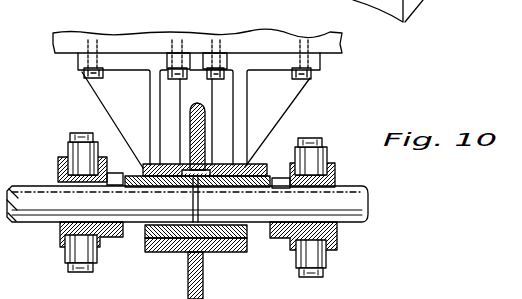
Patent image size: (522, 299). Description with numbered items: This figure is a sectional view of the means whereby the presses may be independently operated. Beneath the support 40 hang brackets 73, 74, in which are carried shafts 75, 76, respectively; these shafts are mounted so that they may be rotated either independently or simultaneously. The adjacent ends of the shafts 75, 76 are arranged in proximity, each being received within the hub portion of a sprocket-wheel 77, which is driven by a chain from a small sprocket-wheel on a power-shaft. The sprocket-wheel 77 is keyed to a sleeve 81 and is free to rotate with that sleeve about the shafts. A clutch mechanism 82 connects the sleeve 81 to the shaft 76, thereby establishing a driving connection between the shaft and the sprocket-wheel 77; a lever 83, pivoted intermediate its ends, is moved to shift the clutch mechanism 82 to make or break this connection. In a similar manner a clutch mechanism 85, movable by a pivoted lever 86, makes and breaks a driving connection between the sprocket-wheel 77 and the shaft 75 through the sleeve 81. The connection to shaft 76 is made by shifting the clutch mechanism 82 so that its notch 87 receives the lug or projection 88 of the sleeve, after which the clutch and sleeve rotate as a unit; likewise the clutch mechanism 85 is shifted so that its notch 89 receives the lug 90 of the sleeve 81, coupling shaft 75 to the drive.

The support 40 is at (203, 44).
The bracket 73 is at (115, 95).
The bracket 74 is at (273, 105).
The shaft 75 is at (43, 200).
The shaft 76 is at (285, 205).
The sprocket-wheel 77 is at (204, 278).
The sleeve 81 is at (185, 240).
The clutch mechanism 82 is at (332, 168).
The lever 83 is at (288, 252).
The clutch mechanism 85 is at (67, 160).
The pivoted lever 86 is at (116, 234).
The notch 87 is at (272, 186).
The lug or projection 88 is at (255, 163).
The notch 89 is at (115, 163).
The lug 90 is at (135, 172).